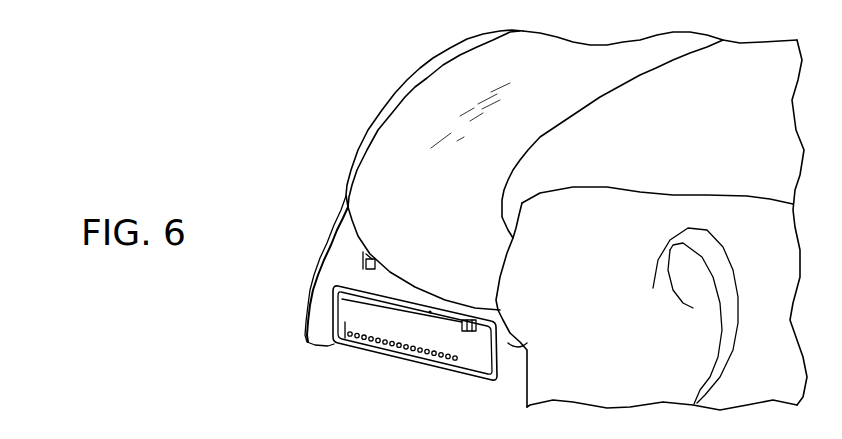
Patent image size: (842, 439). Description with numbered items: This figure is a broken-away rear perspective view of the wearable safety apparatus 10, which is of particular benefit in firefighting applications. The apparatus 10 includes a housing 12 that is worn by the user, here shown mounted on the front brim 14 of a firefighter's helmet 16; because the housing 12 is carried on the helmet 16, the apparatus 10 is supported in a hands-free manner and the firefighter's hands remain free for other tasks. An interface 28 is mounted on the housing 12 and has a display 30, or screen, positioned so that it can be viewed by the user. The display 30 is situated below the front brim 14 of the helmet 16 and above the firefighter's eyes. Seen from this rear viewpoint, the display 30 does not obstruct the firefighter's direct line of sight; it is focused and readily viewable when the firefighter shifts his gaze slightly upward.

The wearable safety apparatus 10 is at (321, 223).
The housing 12 is at (310, 324).
The front brim 14 is at (350, 162).
The helmet 16 is at (382, 83).
The interface 28 is at (313, 286).
The display 30 is at (343, 340).